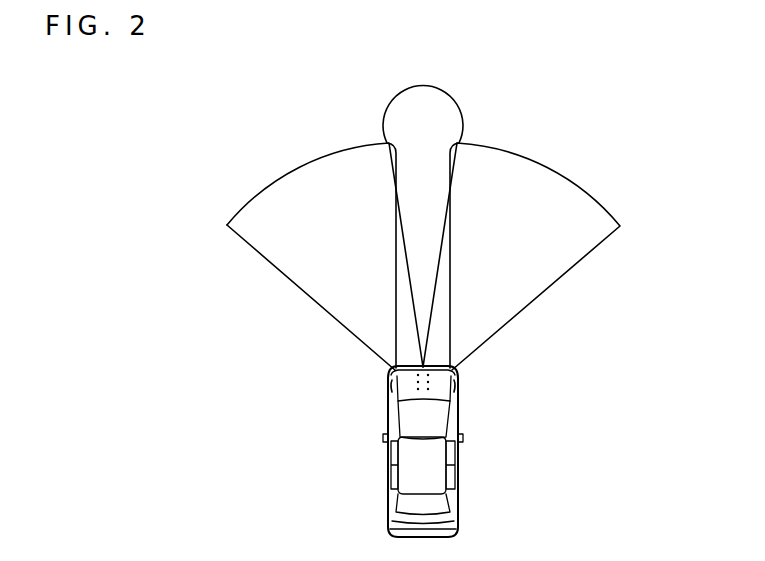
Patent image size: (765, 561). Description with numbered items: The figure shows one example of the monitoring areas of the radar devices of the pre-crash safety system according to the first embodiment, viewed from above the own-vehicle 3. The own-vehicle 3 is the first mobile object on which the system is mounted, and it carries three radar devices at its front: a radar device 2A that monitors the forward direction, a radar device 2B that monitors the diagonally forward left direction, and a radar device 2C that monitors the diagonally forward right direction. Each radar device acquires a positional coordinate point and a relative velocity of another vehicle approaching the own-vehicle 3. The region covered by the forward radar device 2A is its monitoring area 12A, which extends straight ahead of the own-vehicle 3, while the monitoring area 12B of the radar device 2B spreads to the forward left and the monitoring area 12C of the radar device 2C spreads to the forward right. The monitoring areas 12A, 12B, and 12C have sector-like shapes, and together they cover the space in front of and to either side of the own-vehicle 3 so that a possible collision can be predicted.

The monitoring area of the forward radar device 12A is at (423, 128).
The monitoring area of the diagonally forward left radar device 12B is at (305, 198).
The monitoring area of the diagonally forward right radar device 12C is at (527, 187).
The radar device 2A is at (422, 390).
The radar device 2B is at (390, 387).
The radar device 2C is at (458, 388).
The own-vehicle 3 is at (458, 457).